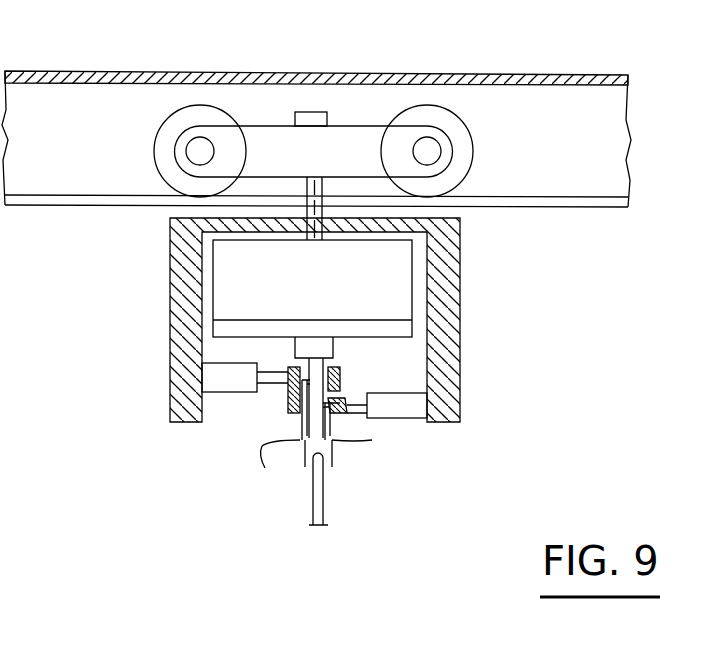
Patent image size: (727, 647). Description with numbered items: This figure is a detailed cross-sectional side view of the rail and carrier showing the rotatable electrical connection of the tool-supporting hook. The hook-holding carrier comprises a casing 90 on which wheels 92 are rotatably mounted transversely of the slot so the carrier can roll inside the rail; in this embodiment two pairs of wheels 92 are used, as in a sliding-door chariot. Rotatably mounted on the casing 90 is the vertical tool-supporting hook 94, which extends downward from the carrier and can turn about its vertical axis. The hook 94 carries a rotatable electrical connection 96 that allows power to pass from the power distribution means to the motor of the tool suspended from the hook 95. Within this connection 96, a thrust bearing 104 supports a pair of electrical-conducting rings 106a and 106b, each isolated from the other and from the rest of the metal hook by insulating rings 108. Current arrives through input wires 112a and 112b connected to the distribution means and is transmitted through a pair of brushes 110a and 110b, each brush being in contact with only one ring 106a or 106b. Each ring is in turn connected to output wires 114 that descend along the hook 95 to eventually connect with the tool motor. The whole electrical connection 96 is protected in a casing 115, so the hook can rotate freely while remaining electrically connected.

The casing 90 is at (257, 144).
The wheels 92 is at (464, 143).
The tool-supporting hook 94 is at (316, 205).
The hook 95 is at (312, 512).
The rotatable electrical connection 96 is at (449, 303).
The thrust bearing 104 is at (316, 303).
The electrical-conducting ring 106a is at (345, 372).
The electrical-conducting ring 106b is at (343, 400).
The insulating rings 108 is at (288, 390).
The brush 110a is at (267, 373).
The brush 110b is at (333, 410).
The input wire 112a is at (187, 375).
The input wire 112b is at (553, 402).
The output wires 114 is at (343, 450).
The casing 115 is at (178, 267).